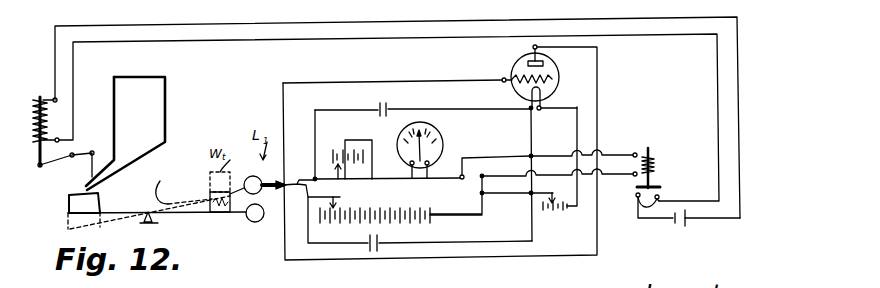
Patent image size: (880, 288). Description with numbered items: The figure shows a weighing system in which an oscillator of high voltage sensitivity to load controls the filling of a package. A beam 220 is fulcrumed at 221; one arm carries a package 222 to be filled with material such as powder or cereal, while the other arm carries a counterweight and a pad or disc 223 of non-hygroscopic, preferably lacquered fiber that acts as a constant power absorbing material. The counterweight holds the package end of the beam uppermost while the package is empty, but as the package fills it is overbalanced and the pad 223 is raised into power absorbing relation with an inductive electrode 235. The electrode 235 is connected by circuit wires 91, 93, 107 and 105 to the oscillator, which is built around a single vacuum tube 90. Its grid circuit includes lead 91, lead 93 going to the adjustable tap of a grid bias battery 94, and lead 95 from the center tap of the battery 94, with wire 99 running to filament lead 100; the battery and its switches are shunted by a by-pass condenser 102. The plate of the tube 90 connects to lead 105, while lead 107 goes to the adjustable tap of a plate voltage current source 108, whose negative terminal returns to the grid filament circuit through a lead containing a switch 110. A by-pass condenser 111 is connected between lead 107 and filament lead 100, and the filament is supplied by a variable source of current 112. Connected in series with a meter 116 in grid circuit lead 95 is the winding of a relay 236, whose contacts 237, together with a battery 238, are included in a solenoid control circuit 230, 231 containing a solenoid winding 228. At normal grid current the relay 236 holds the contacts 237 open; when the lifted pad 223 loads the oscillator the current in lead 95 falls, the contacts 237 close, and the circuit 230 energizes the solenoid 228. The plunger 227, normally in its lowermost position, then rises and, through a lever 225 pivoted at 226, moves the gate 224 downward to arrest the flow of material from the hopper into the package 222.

The circuit wire 231 is at (228, 27).
The solenoid control circuit 230 is at (226, 52).
The solenoid winding 228 is at (40, 98).
The plunger 227 is at (40, 168).
The pivot 226 is at (72, 151).
The lever 225 is at (80, 156).
The gate 224 is at (82, 165).
The power absorbing pad 223 is at (167, 103).
The package 222 is at (100, 194).
The fulcrum 221 is at (155, 217).
The beam 220 is at (184, 187).
The electrode 235 is at (268, 170).
The plate circuit lead 105 is at (420, 263).
The grid circuit lead 91 is at (388, 84).
The vacuum tube 90 is at (514, 66).
The by-pass condenser 102 is at (385, 105).
The filament lead 100 is at (531, 128).
The grid bias battery 94 is at (335, 149).
The grid circuit lead 95 is at (377, 177).
The grid circuit lead 93 is at (336, 184).
The meter 116 is at (437, 138).
The wire 99 is at (512, 158).
The switch 110 is at (484, 211).
The plate circuit lead 107 is at (340, 198).
The plate voltage current source 108 is at (405, 207).
The by-pass condenser 111 is at (379, 246).
The variable source of filament current 112 is at (553, 213).
The relay 236 is at (650, 148).
The relay contacts 237 is at (660, 197).
The battery 238 is at (690, 226).